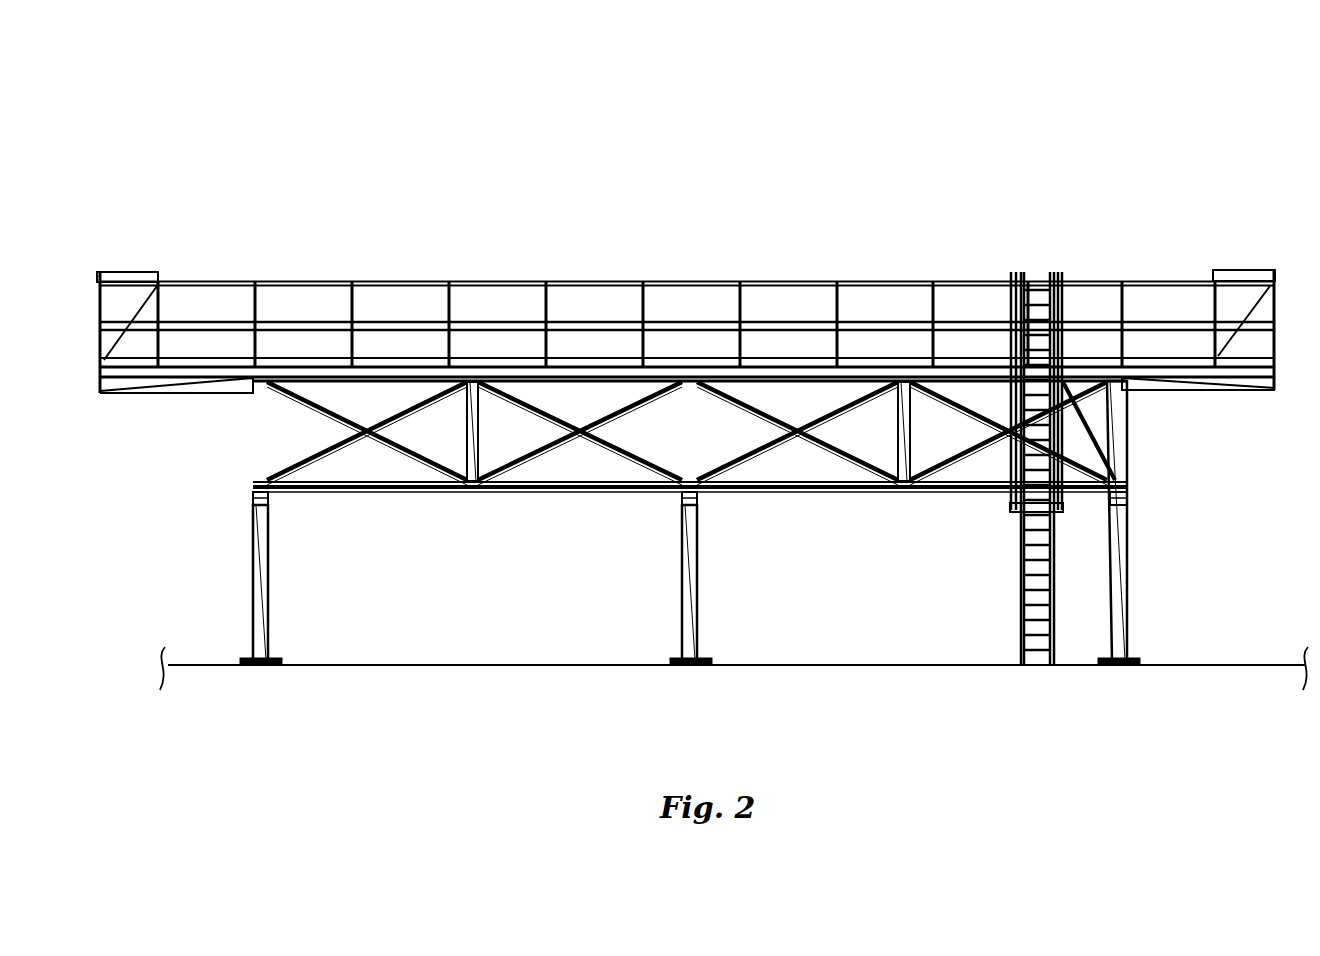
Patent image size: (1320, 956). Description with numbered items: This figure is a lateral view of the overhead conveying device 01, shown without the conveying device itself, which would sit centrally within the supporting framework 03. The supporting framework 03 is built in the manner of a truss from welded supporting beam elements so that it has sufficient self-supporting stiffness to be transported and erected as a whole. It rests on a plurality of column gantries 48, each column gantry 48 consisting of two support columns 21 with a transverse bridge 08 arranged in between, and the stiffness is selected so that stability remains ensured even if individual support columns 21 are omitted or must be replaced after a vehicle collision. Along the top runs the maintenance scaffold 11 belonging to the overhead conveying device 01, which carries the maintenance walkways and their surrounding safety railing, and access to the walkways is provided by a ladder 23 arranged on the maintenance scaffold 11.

The overhead conveying device 01 is at (194, 124).
The maintenance scaffold 11 is at (466, 236).
The supporting framework 03 is at (194, 441).
The transverse bridge 08 is at (268, 500).
The column gantry 48 is at (272, 568).
The support column 21 is at (684, 580).
The ladder 23 is at (1018, 580).